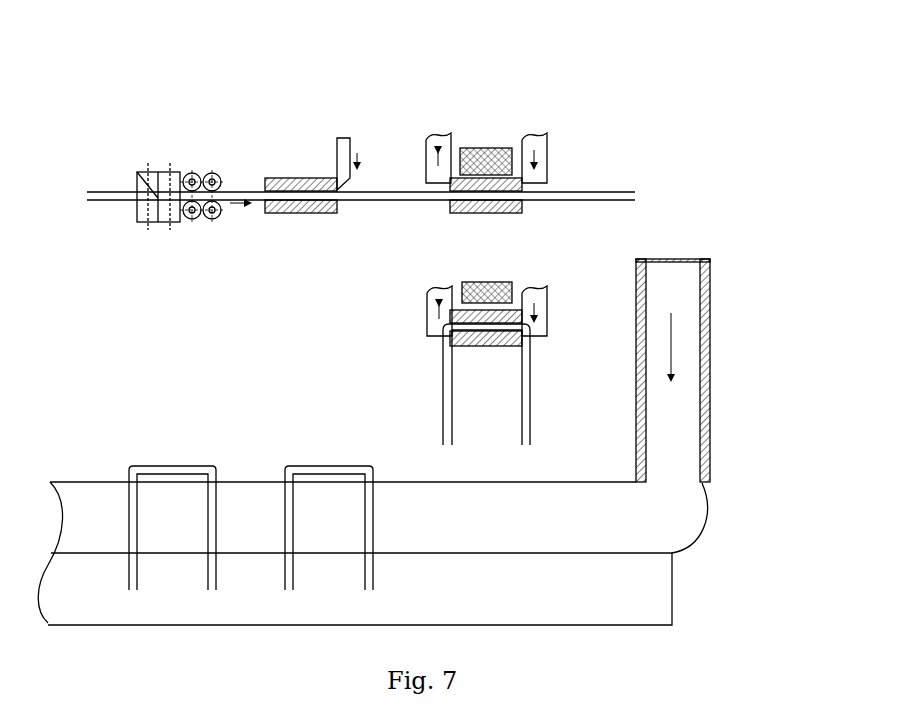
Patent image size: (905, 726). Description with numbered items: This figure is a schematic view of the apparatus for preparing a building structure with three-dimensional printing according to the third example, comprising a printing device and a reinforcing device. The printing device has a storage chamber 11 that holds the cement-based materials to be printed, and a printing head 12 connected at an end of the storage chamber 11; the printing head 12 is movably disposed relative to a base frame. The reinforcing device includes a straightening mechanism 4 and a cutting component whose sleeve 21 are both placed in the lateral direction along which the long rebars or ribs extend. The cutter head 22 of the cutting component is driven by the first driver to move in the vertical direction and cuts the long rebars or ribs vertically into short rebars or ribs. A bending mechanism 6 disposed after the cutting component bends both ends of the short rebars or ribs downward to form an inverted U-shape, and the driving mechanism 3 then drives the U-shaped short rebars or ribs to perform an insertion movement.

The straightening mechanism 4 is at (138, 172).
The sleeve 21 is at (280, 213).
The cutter head 22 is at (350, 150).
The bending mechanism 6 is at (487, 197).
The driving mechanism 3 is at (490, 293).
The storage chamber 11 is at (657, 288).
The printing head 12 is at (697, 480).